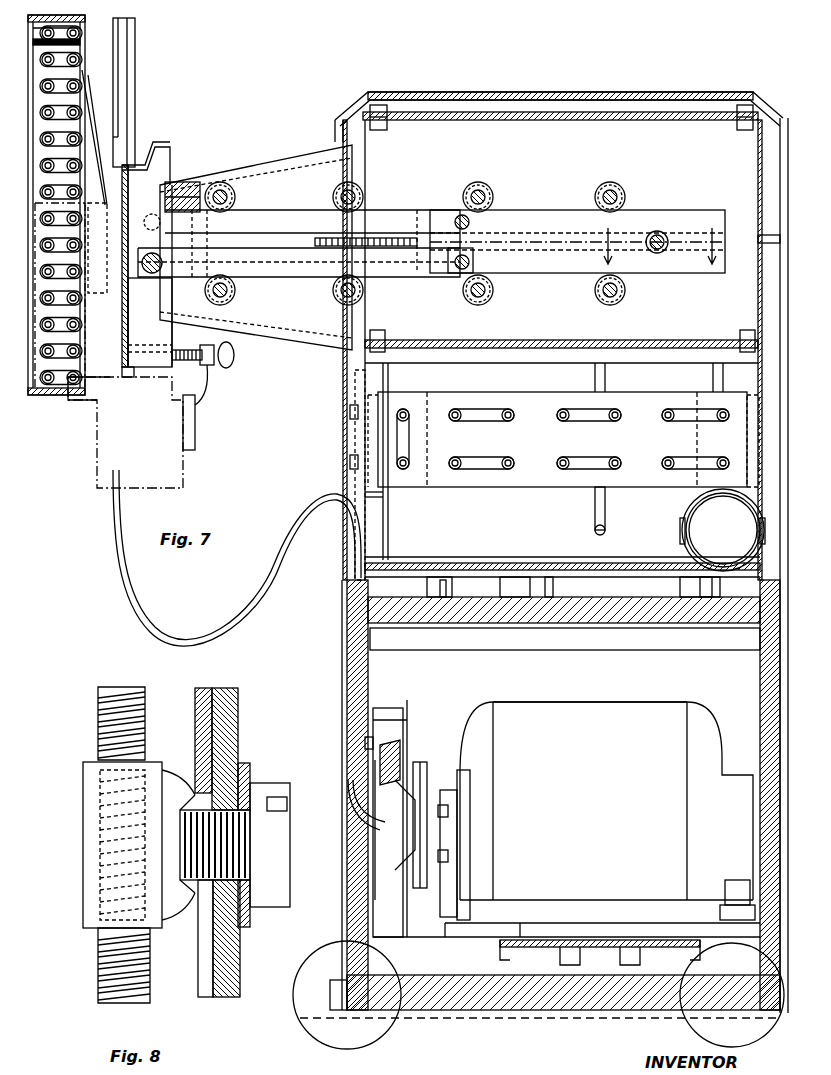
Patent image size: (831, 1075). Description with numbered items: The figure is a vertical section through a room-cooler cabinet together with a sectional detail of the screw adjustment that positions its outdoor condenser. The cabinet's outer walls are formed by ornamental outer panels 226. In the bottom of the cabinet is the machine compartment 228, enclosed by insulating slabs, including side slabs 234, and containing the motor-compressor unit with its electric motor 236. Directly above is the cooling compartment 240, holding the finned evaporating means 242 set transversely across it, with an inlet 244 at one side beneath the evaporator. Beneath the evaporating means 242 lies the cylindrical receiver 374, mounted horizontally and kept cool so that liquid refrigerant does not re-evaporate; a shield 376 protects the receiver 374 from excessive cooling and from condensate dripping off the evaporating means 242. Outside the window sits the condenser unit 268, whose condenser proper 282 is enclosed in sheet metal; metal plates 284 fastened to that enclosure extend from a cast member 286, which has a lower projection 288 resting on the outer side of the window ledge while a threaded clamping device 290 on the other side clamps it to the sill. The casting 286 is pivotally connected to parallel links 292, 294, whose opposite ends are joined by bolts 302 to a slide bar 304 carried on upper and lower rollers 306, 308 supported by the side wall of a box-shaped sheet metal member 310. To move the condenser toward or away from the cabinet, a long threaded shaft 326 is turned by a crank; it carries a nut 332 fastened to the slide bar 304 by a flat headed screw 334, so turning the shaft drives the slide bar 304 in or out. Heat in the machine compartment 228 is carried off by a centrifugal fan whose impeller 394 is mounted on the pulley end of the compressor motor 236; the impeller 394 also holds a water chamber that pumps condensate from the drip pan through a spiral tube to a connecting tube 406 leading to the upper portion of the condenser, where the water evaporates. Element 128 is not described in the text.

In FIG. 7, the rack 128 is at (46, 398).
In FIG. 7, the ornamental outer panels 226 is at (343, 415).
In FIG. 7, the machine compartment 228 is at (566, 681).
In FIG. 7, the side slabs 234 is at (393, 663).
In FIG. 7, the electric motor 236 is at (625, 708).
In FIG. 7, the cooling compartment 240 is at (548, 531).
In FIG. 7, the finned evaporating means 242 is at (568, 389).
In FIG. 7, the inlet 244 is at (378, 506).
In FIG. 7, the condenser unit 268 is at (78, 85).
In FIG. 7, the condenser proper 282 is at (70, 388).
In FIG. 7, the metal plates 284 is at (117, 312).
In FIG. 7, the cast member 286 is at (170, 147).
In FIG. 7, the lower projection 288 is at (133, 378).
In FIG. 7, the threaded clamping device 290 is at (190, 355).
In FIG. 7, the link 292 is at (260, 218).
In FIG. 7, the link 294 is at (262, 268).
In FIG. 7, the bolts 302 is at (462, 255).
In FIG. 7, the slide bar 304 is at (675, 215).
In FIG. 8, the slide bar 304 is at (225, 735).
In FIG. 7, the upper rollers 306 is at (218, 188).
In FIG. 7, the lower rollers 308 is at (232, 300).
In FIG. 7, the box-shaped sheet metal member 310 is at (690, 140).
In FIG. 8, the box-shaped sheet metal member 310 is at (195, 710).
In FIG. 7, the long threaded shaft 326 is at (393, 240).
In FIG. 8, the long threaded shaft 326 is at (98, 712).
In FIG. 8, the nut 332 is at (83, 845).
In FIG. 7, the flat headed screw 334 is at (660, 254).
In FIG. 8, the flat headed screw 334 is at (272, 850).
In FIG. 7, the cylindrical receiver 374 is at (690, 537).
In FIG. 7, the shield 376 is at (687, 512).
In FIG. 7, the impeller 394 is at (382, 745).
In FIG. 7, the connecting tube 406 is at (115, 528).